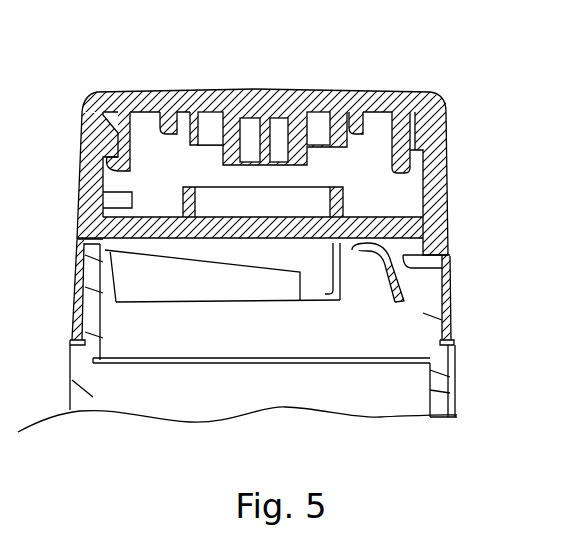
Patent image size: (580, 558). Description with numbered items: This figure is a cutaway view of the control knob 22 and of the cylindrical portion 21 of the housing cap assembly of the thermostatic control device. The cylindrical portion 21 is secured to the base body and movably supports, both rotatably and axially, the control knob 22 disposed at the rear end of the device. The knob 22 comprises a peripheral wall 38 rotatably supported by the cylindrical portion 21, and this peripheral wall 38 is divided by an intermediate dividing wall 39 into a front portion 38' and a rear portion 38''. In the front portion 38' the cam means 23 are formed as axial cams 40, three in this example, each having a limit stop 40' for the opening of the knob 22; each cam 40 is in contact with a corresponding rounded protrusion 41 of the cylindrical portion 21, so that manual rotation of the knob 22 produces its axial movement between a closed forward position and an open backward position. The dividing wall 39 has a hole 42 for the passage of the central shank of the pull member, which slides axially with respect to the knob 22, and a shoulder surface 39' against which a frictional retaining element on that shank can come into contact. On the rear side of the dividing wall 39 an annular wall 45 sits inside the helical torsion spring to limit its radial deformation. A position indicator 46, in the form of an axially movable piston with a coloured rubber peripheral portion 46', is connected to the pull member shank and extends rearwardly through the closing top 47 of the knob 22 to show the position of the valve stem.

The cylindrical portion 21 is at (443, 390).
The control knob 22 is at (456, 94).
The cam means 23 is at (402, 242).
The peripheral wall 38 is at (303, 193).
The front portion 38' is at (303, 293).
The rear portion 38'' is at (473, 182).
The intermediate dividing wall 39 is at (407, 135).
The shoulder surface 39' is at (293, 117).
The axial cam 40 is at (316, 353).
The limit stop 40' is at (381, 357).
The rounded protrusion 41 is at (78, 245).
The hole 42 is at (258, 225).
The annular wall 45 is at (186, 186).
The indicator 46 is at (226, 78).
The peripheral portion 46' is at (366, 82).
The closing top 47 is at (102, 99).